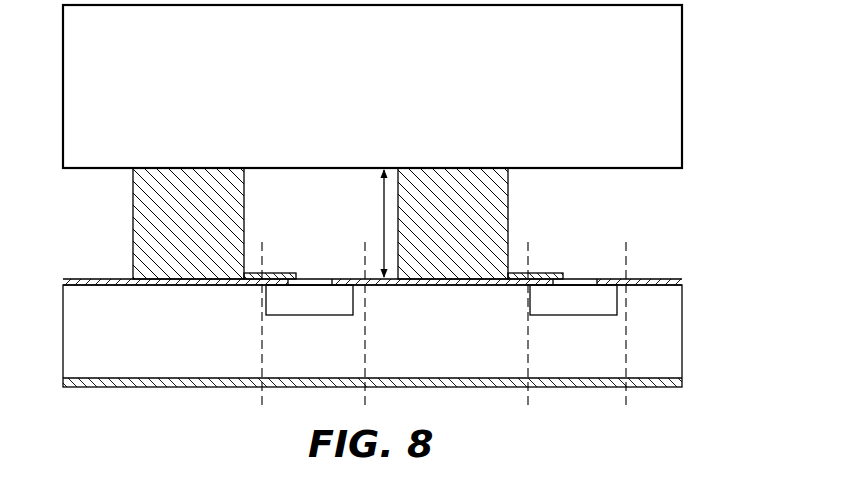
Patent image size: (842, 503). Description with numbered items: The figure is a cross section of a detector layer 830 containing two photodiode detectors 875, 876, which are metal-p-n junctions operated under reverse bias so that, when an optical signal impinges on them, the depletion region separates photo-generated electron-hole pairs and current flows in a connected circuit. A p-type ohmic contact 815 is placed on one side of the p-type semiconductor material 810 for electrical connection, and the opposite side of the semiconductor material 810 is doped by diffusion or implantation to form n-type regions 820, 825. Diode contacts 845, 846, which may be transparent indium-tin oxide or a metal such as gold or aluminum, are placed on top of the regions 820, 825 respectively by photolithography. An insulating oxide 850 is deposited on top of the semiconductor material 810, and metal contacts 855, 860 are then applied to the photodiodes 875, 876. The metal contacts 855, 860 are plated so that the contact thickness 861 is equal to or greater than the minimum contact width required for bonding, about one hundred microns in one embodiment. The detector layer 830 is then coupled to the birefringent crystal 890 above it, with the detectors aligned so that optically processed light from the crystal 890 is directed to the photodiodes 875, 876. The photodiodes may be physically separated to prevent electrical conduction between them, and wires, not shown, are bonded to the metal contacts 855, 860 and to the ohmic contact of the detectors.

The birefringent crystal 890 is at (656, 143).
The metal contact 855 is at (131, 207).
The metal contact 860 is at (512, 187).
The contact thickness 861 is at (383, 190).
The diode contact 845 is at (313, 272).
The diode contact 846 is at (583, 277).
The insulating oxide 850 is at (97, 277).
The p-type semiconductor material 810 is at (676, 367).
The p-type ohmic contact 815 is at (668, 390).
The n-type region 820 is at (343, 310).
The n-type region 825 is at (604, 311).
The photodiode detector 875 is at (323, 418).
The photodiode detector 876 is at (593, 417).
The detector layer 830 is at (676, 265).